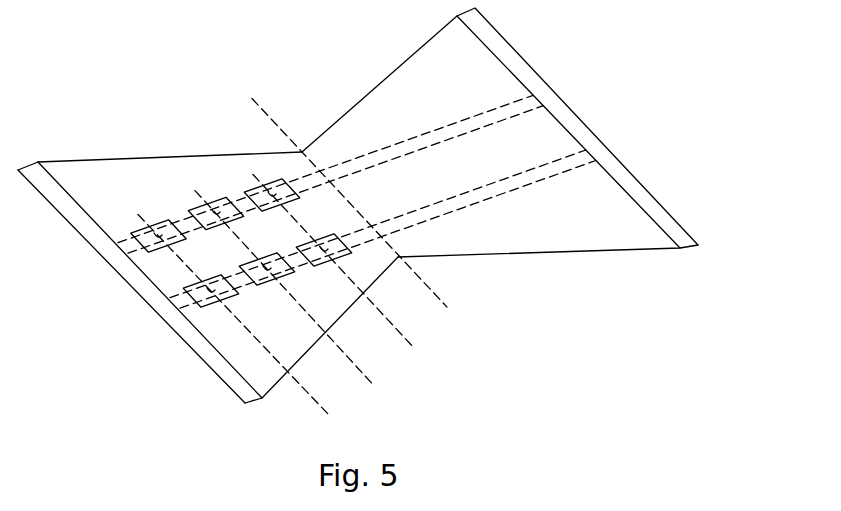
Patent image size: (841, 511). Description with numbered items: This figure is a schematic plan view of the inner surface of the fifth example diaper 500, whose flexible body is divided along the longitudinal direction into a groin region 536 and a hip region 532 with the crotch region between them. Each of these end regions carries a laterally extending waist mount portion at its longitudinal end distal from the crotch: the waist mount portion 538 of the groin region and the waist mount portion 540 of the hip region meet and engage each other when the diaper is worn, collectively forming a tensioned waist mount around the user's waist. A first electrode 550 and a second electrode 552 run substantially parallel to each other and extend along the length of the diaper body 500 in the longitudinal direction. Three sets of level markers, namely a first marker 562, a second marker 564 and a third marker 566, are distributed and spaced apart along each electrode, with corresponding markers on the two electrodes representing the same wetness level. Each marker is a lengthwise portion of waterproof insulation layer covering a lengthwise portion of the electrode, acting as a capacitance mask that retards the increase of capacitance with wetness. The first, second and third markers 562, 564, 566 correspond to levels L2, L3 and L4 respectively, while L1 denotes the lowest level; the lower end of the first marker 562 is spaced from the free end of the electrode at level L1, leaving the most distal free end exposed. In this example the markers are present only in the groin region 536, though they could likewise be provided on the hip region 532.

The fifth example diaper 500 is at (214, 58).
The hip region 532 is at (500, 128).
The groin region 536 is at (160, 277).
The waist mount portion of the groin region 538 is at (246, 391).
The waist mount portion of the hip region 540 is at (682, 250).
The first electrode 550 is at (529, 102).
The second electrode 552 is at (581, 158).
The first marker 562 is at (322, 250).
The second marker 564 is at (265, 268).
The third marker 566 is at (209, 290).
The level L1 is at (362, 213).
The level L2 is at (346, 270).
The level L3 is at (294, 298).
The level L4 is at (244, 328).